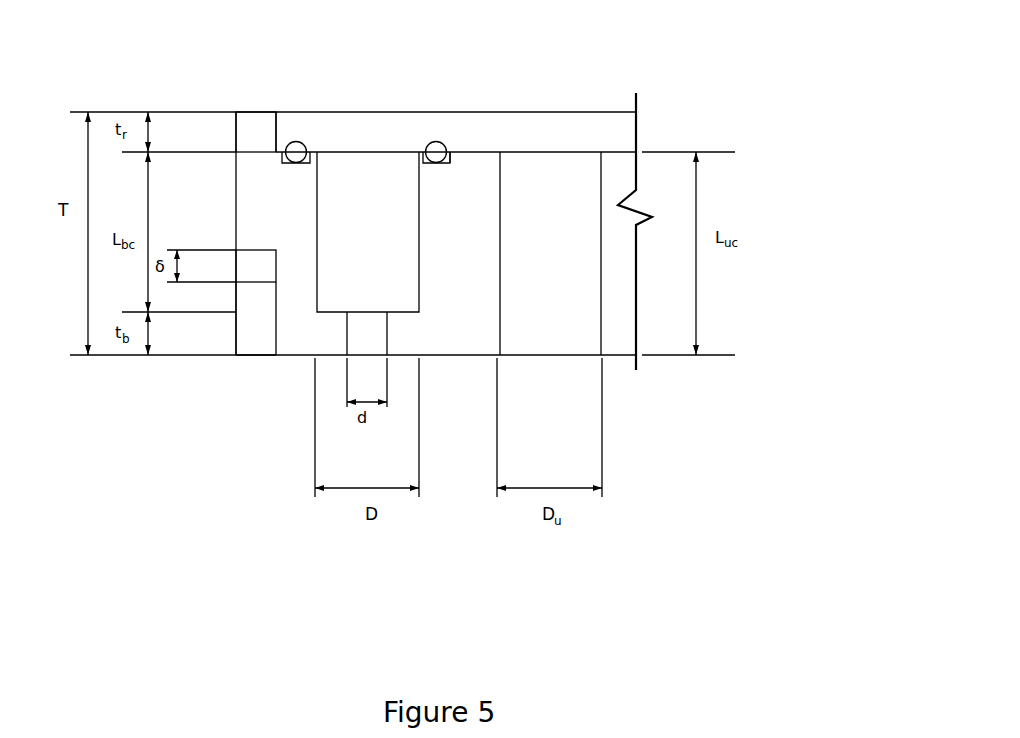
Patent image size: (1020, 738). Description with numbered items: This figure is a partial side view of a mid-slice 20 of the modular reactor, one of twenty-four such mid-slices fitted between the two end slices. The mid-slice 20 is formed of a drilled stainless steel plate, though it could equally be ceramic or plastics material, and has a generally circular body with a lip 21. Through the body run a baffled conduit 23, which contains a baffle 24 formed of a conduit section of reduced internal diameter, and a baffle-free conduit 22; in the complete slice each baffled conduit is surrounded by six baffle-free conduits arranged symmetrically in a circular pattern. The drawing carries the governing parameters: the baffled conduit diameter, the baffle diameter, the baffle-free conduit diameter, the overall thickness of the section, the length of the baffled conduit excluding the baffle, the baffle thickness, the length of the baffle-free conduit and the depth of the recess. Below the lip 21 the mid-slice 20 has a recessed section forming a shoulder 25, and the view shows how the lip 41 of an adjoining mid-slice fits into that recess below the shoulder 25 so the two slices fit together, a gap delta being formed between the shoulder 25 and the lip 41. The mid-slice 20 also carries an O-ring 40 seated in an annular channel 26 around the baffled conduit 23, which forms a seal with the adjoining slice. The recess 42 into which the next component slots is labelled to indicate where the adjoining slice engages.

The mid-slice 20 is at (642, 268).
The lip 21 is at (255, 128).
The baffle-free conduit 22 is at (567, 191).
The baffled conduit 23 is at (338, 166).
The baffle 24 is at (347, 328).
The shoulder 25 is at (256, 251).
The annular channel 26 is at (442, 167).
The O-ring 40 is at (435, 157).
The lip of adjoining mid-slice 41 is at (240, 343).
The recess for next component 42 is at (627, 131).